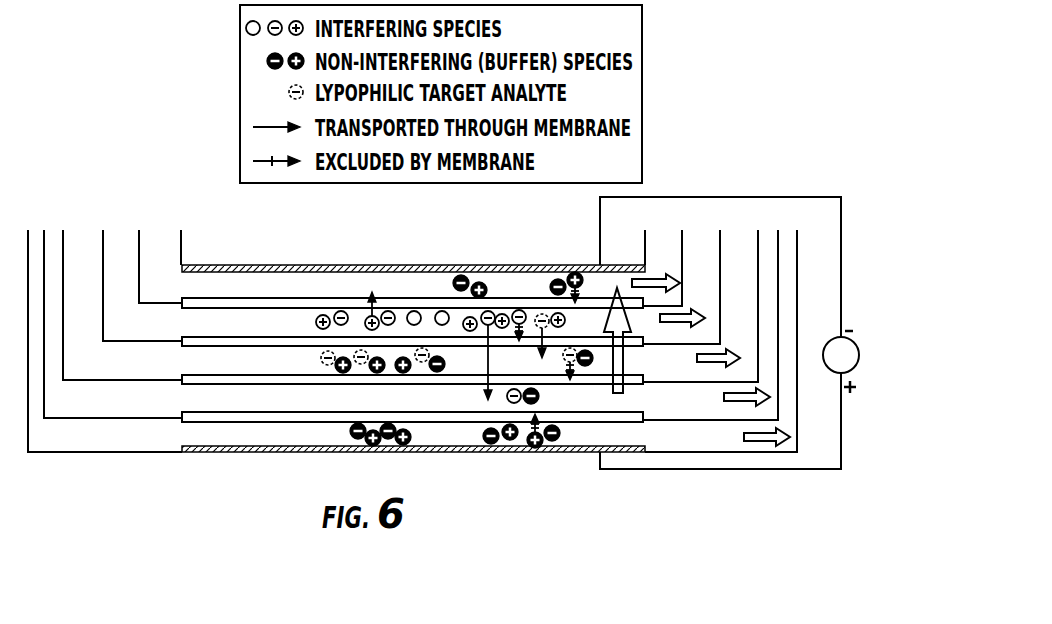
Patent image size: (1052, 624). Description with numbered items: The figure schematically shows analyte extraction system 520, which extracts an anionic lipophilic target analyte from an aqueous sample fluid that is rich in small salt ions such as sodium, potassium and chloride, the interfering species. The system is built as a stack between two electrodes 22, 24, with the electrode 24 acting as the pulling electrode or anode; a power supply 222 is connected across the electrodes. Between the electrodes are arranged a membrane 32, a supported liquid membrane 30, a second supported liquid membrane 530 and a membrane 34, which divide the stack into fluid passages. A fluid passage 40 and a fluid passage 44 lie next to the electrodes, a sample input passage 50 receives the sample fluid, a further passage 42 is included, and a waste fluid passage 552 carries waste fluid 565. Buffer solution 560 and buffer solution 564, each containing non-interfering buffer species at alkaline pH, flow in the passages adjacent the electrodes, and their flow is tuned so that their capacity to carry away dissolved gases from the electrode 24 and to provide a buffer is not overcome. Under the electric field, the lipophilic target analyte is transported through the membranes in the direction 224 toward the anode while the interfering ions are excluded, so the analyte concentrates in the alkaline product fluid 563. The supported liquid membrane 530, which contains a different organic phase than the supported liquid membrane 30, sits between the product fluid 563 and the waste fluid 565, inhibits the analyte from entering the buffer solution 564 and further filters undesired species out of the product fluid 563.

The analyte extraction system 520 is at (153, 128).
The fluid passage 44 is at (29, 250).
The waste fluid passage 552 is at (64, 250).
The electrical lead to second membrane 42 is at (104, 250).
The sample input passage 50 is at (140, 250).
The fluid passage 40 is at (181, 252).
The electrode 22 is at (488, 266).
The membrane 32 is at (270, 297).
The supported liquid membrane 30 is at (190, 346).
The supported liquid membrane 530 is at (190, 384).
The membrane 34 is at (597, 417).
The electrode 24 is at (493, 453).
The buffer solution 560 is at (650, 277).
The product fluid 563 is at (688, 310).
The analyte transport direction 224 is at (622, 355).
The waste fluid 565 is at (772, 395).
The buffer solution 564 is at (760, 446).
The power supply 222 is at (858, 341).